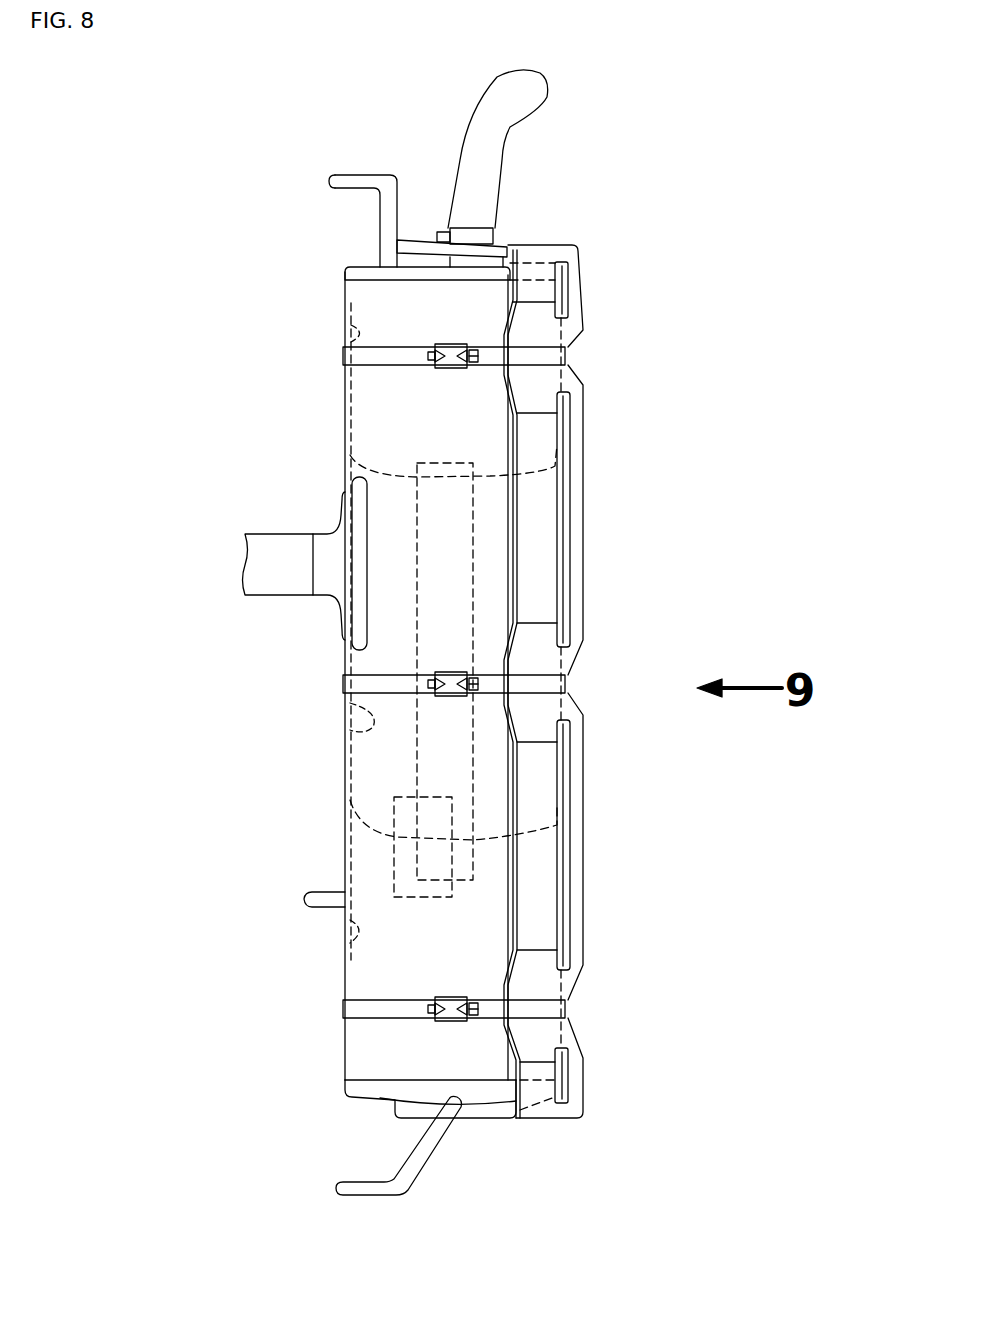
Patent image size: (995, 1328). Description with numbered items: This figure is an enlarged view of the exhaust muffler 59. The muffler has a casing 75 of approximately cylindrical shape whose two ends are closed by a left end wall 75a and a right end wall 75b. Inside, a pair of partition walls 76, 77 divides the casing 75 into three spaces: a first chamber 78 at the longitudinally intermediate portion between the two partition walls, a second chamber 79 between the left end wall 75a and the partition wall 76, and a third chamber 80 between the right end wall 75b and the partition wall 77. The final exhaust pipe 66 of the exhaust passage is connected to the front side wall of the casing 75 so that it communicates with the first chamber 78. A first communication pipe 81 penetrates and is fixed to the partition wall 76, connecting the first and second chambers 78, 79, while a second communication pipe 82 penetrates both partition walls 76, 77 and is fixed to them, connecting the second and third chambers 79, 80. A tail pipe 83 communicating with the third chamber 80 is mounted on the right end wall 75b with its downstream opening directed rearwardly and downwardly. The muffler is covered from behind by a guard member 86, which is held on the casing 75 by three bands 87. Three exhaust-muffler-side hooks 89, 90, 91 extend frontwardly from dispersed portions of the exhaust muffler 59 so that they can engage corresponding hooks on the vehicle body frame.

The exhaust muffler 59 is at (340, 768).
The final exhaust pipe 66 is at (275, 548).
The casing 75 is at (375, 448).
The left end wall 75a is at (377, 1095).
The right end wall 75b is at (365, 268).
The partition wall 76 is at (487, 840).
The partition wall 77 is at (490, 478).
The first chamber 78 is at (365, 712).
The second chamber 79 is at (350, 943).
The third chamber 80 is at (350, 340).
The first communication pipe 81 is at (394, 882).
The second communication pipe 82 is at (473, 600).
The tail pipe 83 is at (490, 205).
The guard member 86 is at (585, 818).
The band 87 is at (555, 356).
The exhaust-muffler-side hook 89 is at (312, 905).
The exhaust-muffler-side hook 90 is at (420, 1195).
The exhaust-muffler-side hook 91 is at (372, 177).